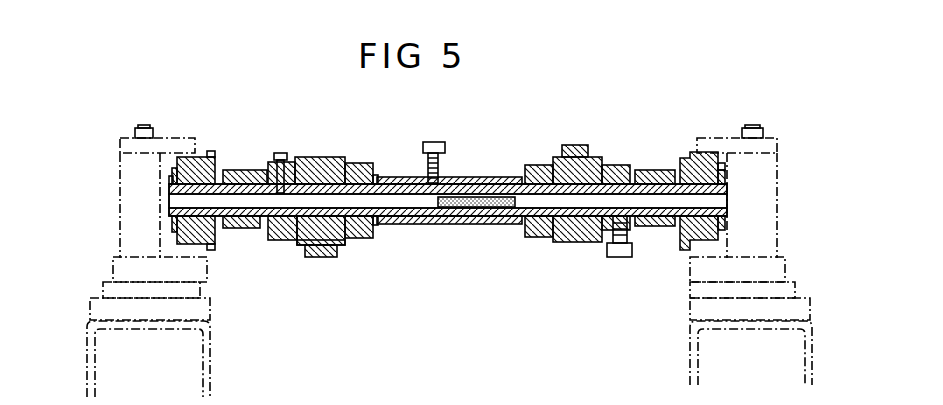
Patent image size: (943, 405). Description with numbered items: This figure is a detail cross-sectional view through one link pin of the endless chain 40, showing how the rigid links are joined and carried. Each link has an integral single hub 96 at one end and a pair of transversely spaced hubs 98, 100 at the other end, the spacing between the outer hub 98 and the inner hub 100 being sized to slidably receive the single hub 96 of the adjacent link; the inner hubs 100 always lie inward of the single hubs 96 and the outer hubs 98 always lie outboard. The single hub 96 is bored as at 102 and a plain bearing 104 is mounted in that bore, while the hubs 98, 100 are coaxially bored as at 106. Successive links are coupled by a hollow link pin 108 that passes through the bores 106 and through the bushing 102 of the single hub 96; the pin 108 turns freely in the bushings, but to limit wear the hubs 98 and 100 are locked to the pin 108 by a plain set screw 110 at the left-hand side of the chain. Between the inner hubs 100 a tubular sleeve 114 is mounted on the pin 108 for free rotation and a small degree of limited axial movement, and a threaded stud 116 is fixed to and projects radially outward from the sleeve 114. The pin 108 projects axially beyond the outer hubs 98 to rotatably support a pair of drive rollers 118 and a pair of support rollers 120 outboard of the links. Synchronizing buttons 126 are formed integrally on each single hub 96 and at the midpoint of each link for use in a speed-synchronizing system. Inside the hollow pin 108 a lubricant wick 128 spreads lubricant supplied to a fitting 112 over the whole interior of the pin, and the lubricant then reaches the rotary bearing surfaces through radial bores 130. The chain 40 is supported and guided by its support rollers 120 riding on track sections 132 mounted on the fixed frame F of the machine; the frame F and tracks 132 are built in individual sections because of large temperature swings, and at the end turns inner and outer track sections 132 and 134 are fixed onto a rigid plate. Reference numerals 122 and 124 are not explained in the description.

The endless chain 40 is at (642, 123).
The single hub 96 is at (448, 216).
The outer hub 98 is at (454, 233).
The inner hub 100 is at (449, 264).
The bore 102 is at (475, 143).
The plain bearing 104 is at (316, 265).
The coaxial bore 106 is at (293, 200).
The hollow link pin 108 is at (456, 181).
The set screw 110 is at (319, 142).
The lubricant fitting 112 is at (615, 270).
The tubular sleeve 114 is at (448, 231).
The threaded stud 116 is at (461, 160).
The drive roller 118 is at (483, 159).
The support roller 120 is at (508, 163).
The bushing 122 is at (465, 200).
The spacer 124 is at (453, 165).
The synchronizing button 126 is at (480, 219).
The lubricant wick 128 is at (476, 256).
The radial bore 130 is at (448, 202).
The track section 132 is at (420, 310).
The outer track section 134 is at (486, 118).
The frame F is at (449, 267).